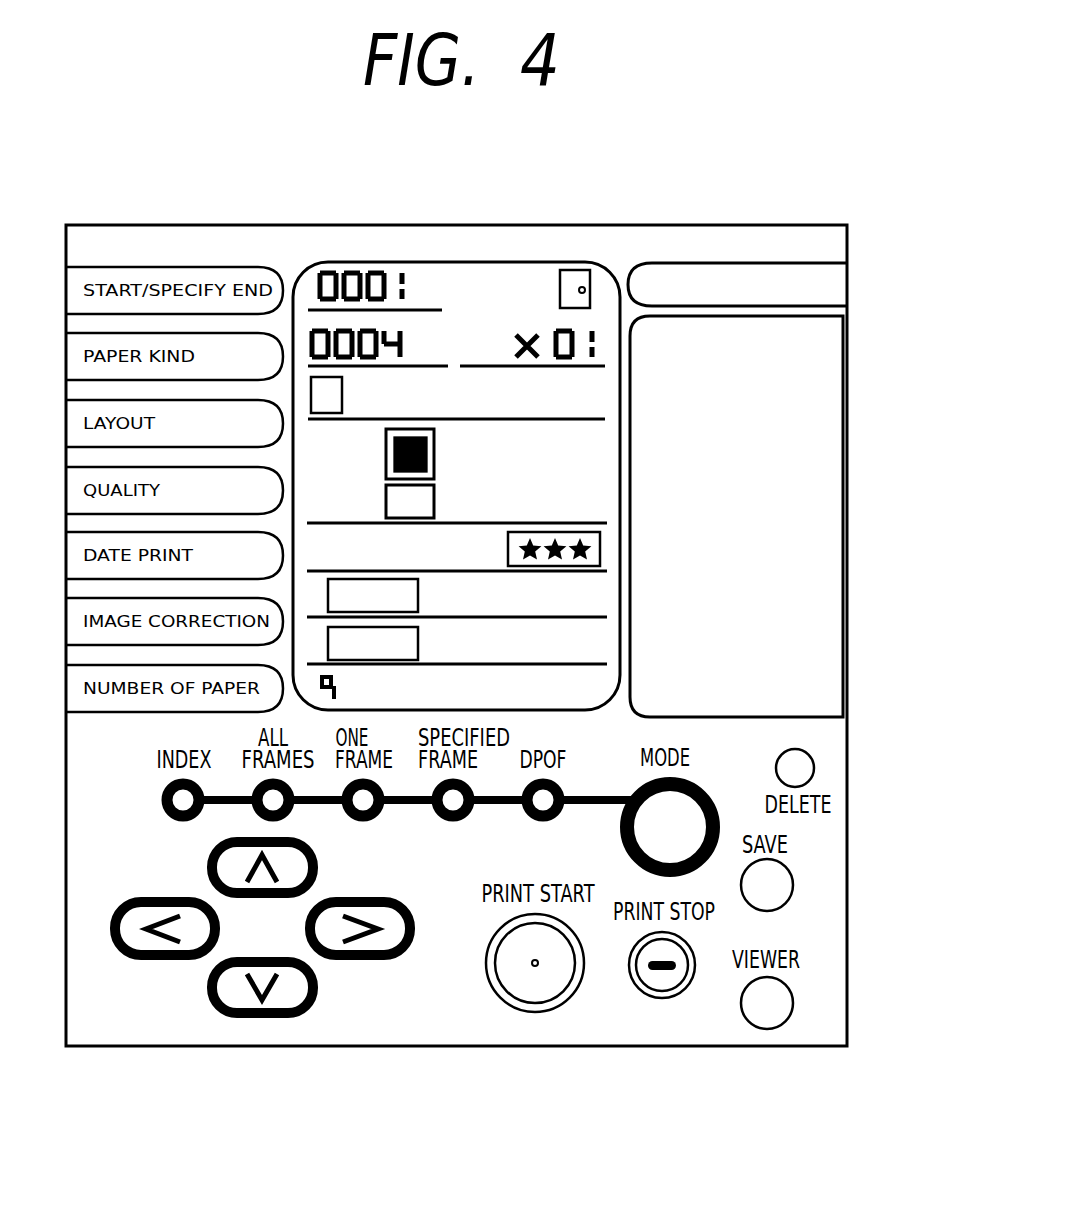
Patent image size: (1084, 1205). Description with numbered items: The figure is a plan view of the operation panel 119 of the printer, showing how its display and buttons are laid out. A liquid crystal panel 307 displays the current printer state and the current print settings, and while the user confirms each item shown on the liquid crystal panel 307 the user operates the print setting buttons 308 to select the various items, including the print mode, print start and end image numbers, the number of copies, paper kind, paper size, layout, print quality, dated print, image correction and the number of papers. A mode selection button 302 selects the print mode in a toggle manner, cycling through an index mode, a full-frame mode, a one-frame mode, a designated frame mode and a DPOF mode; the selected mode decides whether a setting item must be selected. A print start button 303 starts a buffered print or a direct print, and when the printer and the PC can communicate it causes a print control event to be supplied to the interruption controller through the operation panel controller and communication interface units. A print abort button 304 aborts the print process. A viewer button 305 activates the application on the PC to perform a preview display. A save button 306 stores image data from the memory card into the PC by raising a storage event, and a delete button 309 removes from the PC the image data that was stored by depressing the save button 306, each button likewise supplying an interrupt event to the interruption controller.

The liquid crystal panel 307 is at (457, 262).
The operation panel 119 is at (692, 258).
The mode selection button 302 is at (712, 795).
The print start button 303 is at (527, 1013).
The print abort button 304 is at (660, 998).
The viewer button 305 is at (763, 1029).
The save button 306 is at (793, 884).
The print setting buttons 308 is at (152, 960).
The delete button 309 is at (815, 768).